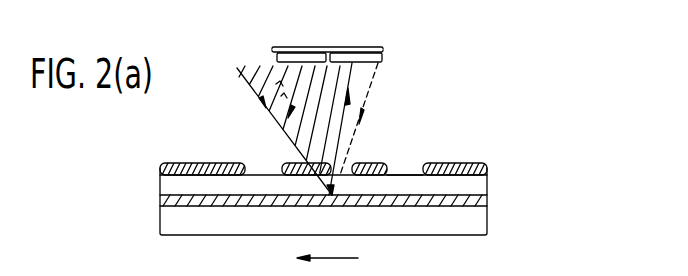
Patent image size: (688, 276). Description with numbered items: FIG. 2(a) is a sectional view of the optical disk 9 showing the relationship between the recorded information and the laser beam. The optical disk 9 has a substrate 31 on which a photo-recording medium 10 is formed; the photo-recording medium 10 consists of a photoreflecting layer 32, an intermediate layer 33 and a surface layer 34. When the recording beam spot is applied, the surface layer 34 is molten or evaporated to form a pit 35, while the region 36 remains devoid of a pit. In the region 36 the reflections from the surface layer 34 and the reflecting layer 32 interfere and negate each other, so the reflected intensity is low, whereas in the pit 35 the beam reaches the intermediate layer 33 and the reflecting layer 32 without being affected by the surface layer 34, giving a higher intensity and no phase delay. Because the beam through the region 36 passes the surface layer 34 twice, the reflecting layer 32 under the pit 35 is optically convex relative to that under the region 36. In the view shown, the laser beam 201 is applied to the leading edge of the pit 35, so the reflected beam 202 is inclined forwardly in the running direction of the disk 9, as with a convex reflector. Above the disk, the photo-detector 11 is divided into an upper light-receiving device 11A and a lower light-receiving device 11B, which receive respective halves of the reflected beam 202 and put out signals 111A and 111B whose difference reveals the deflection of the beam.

The optical disk 9 is at (562, 157).
The photo-recording medium 10 is at (537, 158).
The photo-detector 11 is at (385, 48).
The light-receiving device 11A is at (383, 57).
The light-receiving device 11B is at (278, 61).
The signal 111A is at (356, 47).
The signal 111B is at (300, 47).
The laser beam 201 is at (372, 106).
The reflected beam 202 is at (264, 115).
The substrate 31 is at (484, 222).
The photoreflecting layer 32 is at (488, 200).
The intermediate layer 33 is at (488, 189).
The surface layer 34 is at (488, 170).
The pit 35 is at (376, 164).
The region 36 is at (384, 162).